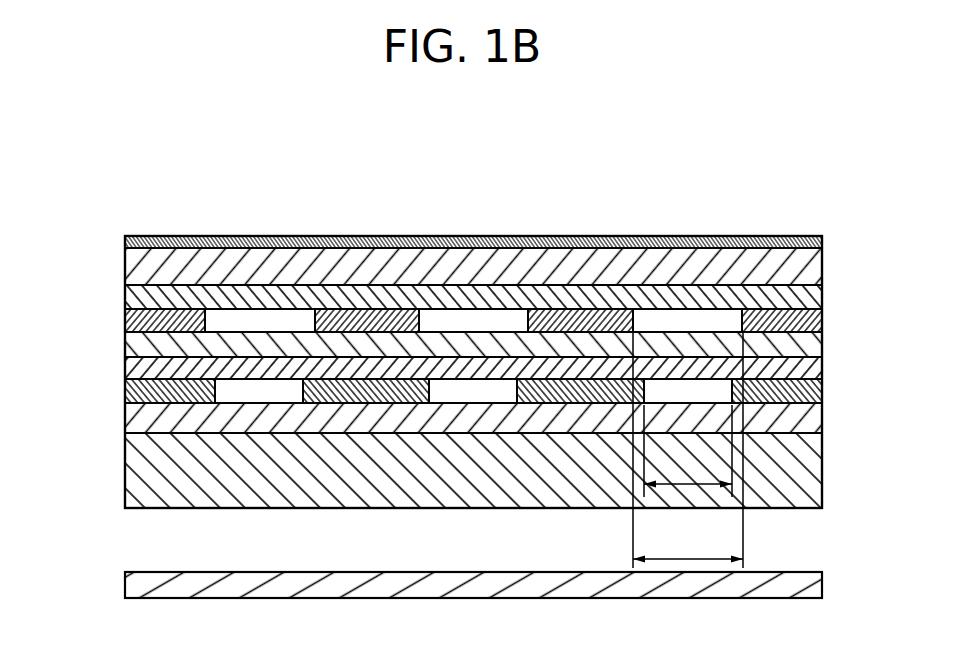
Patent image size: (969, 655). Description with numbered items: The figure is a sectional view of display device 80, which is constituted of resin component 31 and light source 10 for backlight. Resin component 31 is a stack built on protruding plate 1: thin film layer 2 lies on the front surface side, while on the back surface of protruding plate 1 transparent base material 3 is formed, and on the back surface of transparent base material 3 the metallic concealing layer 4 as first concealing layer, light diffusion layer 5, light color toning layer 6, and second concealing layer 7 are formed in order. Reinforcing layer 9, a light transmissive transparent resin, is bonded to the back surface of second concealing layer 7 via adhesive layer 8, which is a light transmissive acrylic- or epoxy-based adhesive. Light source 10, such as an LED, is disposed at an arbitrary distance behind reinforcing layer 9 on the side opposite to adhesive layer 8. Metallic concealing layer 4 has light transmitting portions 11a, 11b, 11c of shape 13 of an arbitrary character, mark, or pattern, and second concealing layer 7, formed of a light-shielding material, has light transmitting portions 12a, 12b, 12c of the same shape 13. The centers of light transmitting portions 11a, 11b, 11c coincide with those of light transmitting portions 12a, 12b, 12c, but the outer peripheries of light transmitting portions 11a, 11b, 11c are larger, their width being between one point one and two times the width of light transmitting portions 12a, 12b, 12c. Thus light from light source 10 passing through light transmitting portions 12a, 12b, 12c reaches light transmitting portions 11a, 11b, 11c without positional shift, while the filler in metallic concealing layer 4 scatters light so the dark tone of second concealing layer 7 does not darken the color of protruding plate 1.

The protruding plate 1 is at (813, 262).
The thin film layer 2 is at (793, 237).
The transparent base material 3 is at (813, 290).
The metallic concealing layer 4 is at (815, 318).
The light diffusion layer 5 is at (813, 345).
The light color toning layer 6 is at (813, 370).
The second concealing layer 7 is at (813, 390).
The adhesive layer 8 is at (813, 420).
The reinforcing layer 9 is at (813, 462).
The light source 10 is at (813, 580).
The light transmitting portion 11a is at (278, 320).
The light transmitting portion 11b is at (504, 322).
The light transmitting portion 11c is at (708, 320).
The light transmitting portion 12a is at (248, 392).
The light transmitting portion 12b is at (473, 392).
The light transmitting portion 12c is at (677, 392).
The shape 13 is at (293, 226).
The resin component 31 is at (115, 237).
The display device 80 is at (106, 542).